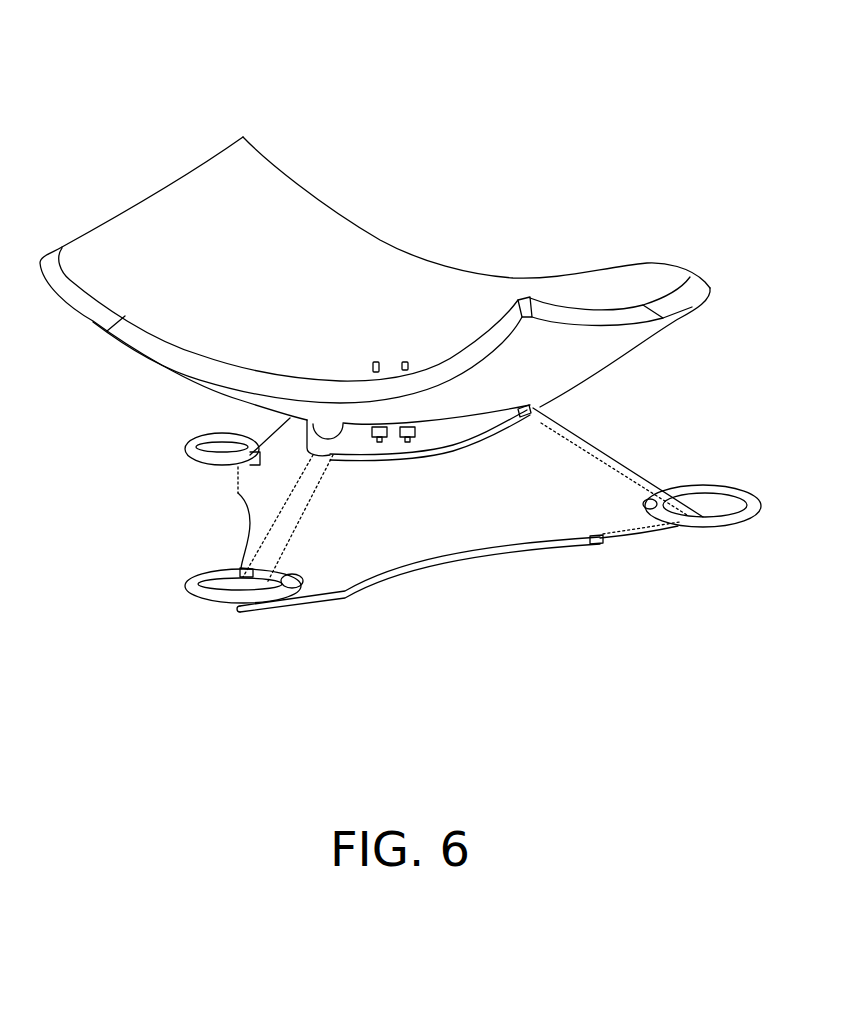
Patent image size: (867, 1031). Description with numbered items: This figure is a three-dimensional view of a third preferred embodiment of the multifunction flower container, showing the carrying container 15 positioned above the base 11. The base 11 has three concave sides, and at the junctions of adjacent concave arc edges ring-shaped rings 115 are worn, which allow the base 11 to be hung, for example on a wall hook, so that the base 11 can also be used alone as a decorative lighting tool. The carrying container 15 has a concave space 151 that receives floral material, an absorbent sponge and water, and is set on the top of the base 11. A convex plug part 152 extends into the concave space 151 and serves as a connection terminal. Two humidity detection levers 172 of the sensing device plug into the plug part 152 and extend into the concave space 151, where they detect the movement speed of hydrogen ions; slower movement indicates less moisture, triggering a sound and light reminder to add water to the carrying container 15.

The base 11 is at (403, 543).
The carrying container 15 is at (381, 224).
The rings 115 is at (190, 452).
The concave space 151 is at (173, 237).
The plug part 152 is at (403, 363).
The humidity detection lever 172 is at (377, 441).